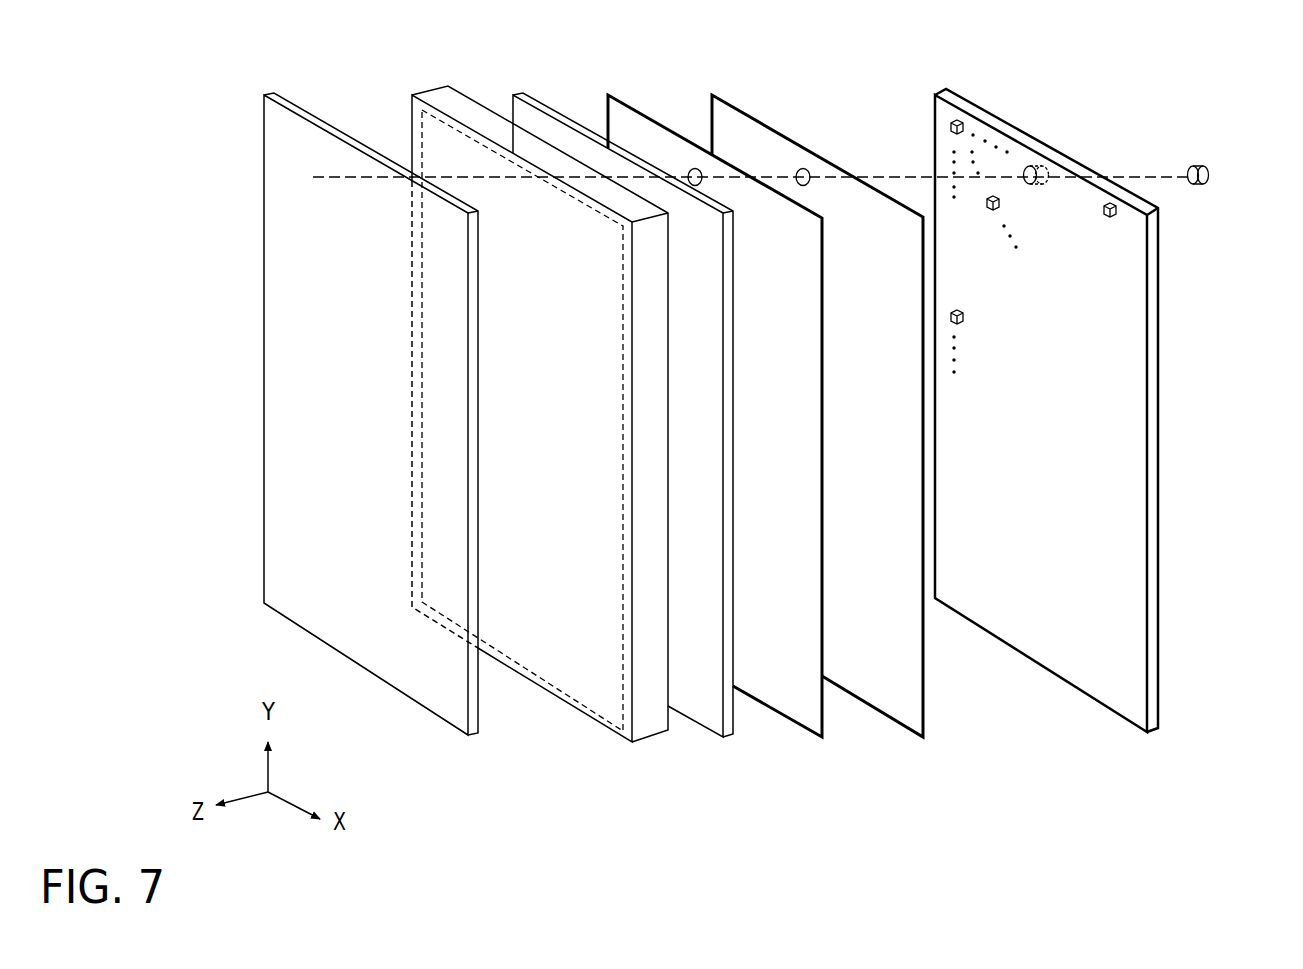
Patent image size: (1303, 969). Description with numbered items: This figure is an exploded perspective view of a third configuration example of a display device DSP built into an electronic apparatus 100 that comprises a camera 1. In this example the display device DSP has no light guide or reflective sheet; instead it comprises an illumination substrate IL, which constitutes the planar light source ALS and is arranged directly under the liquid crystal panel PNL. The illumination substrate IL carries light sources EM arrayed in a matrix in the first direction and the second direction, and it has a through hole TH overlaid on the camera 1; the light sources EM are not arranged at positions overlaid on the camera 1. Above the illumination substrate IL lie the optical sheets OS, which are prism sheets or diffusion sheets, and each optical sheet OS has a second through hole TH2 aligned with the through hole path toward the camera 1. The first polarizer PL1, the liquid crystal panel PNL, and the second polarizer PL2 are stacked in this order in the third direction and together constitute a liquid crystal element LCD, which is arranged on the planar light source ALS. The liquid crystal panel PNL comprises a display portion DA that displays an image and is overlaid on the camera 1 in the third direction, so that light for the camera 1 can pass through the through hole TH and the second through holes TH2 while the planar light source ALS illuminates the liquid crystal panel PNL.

The electronic apparatus 100 is at (1235, 83).
The camera 1 is at (1198, 165).
The display device DSP is at (1188, 852).
The liquid crystal element LCD is at (768, 798).
The second polarizer PL2 is at (470, 740).
The liquid crystal panel PNL is at (548, 439).
The display portion DA is at (554, 663).
The first polarizer PL1 is at (730, 732).
The optical sheets OS is at (765, 420).
The second through hole TH2 is at (694, 168).
The planar light source ALS is at (1037, 675).
The illumination substrate IL is at (1156, 741).
The light sources EM is at (950, 117).
The through hole TH is at (1024, 167).